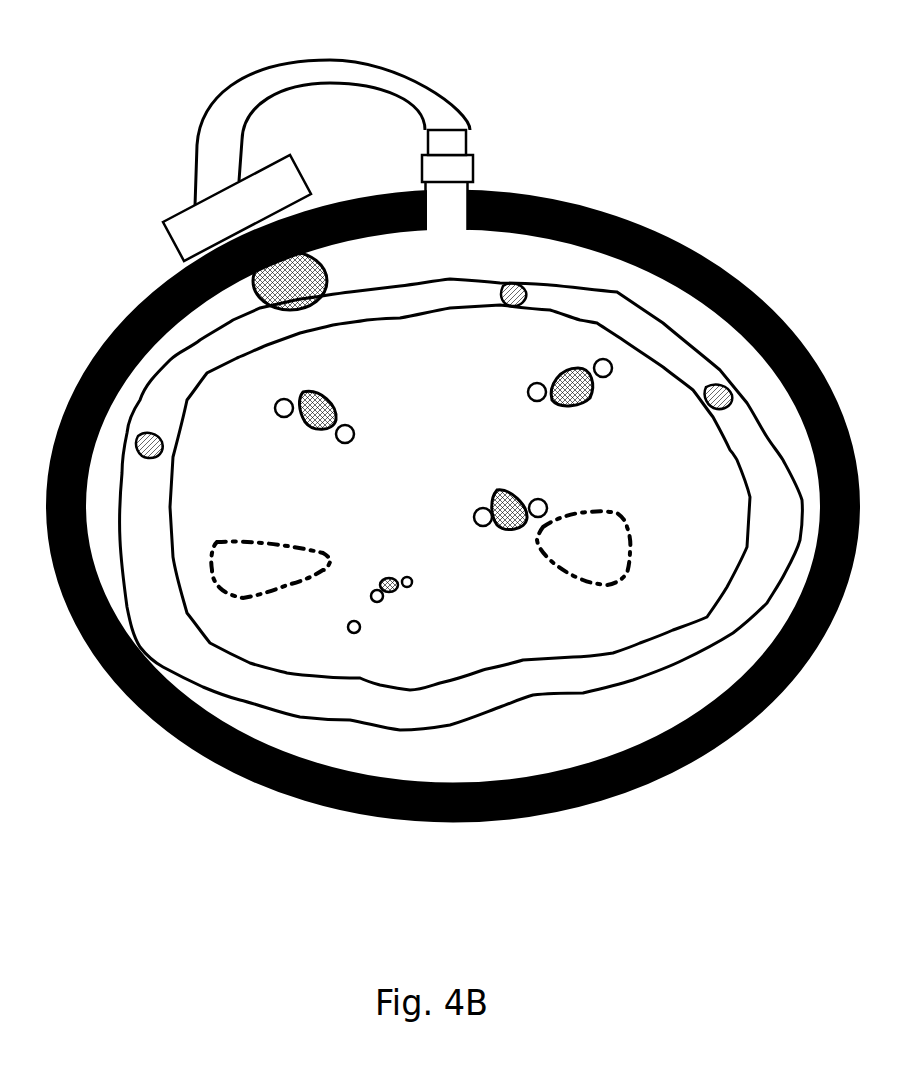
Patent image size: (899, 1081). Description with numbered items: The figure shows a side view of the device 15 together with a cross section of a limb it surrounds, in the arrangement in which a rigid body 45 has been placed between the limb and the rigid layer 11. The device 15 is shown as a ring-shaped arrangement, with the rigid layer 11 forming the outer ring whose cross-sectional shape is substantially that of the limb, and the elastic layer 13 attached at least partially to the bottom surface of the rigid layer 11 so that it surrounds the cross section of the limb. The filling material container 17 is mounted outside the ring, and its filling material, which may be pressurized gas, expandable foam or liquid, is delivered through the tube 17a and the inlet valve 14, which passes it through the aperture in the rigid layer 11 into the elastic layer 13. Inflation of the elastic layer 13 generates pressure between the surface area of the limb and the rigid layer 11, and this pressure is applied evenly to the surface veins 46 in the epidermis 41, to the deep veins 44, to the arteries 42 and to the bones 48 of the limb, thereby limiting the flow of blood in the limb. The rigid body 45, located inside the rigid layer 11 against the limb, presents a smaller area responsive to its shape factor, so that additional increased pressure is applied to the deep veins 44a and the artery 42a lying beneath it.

The rigid layer 11 is at (434, 453).
The elastic layer 13 is at (417, 760).
The inlet valve 14 is at (467, 147).
The device 15 is at (304, 144).
The filling material container 17 is at (165, 228).
The tube 17a is at (363, 61).
The epidermis 41 is at (590, 690).
The arteries 42 is at (588, 396).
The artery 42a is at (337, 405).
The deep veins 44 is at (530, 396).
The deep veins 44a is at (355, 436).
The rigid body 45 is at (320, 278).
The surface veins 46 is at (527, 296).
The bones 48 is at (275, 588).